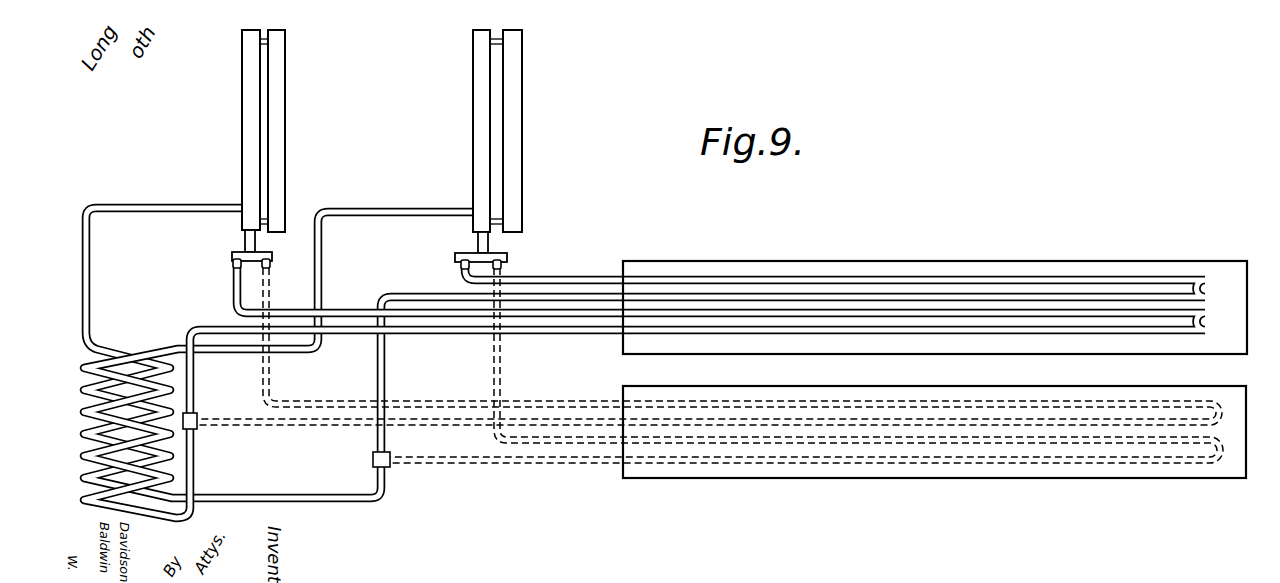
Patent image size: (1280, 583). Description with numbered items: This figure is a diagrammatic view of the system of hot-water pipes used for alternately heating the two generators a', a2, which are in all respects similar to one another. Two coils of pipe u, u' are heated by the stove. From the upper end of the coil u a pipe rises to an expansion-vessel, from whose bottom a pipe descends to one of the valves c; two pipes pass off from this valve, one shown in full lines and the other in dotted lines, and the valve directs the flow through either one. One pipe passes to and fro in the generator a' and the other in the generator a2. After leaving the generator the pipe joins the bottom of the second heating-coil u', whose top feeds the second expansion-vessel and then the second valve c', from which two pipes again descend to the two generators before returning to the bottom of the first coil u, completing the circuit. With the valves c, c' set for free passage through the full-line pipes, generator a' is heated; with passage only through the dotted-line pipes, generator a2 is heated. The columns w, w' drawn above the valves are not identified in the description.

The compression column w is at (263, 141).
The second compression column w' is at (497, 141).
The hot-water-circulation valve c is at (250, 253).
The second connecting fitting c' is at (481, 253).
The generator a' is at (935, 295).
The generator a2 is at (934, 420).
The heating-coil u is at (167, 448).
The second heating-coil u' is at (158, 369).